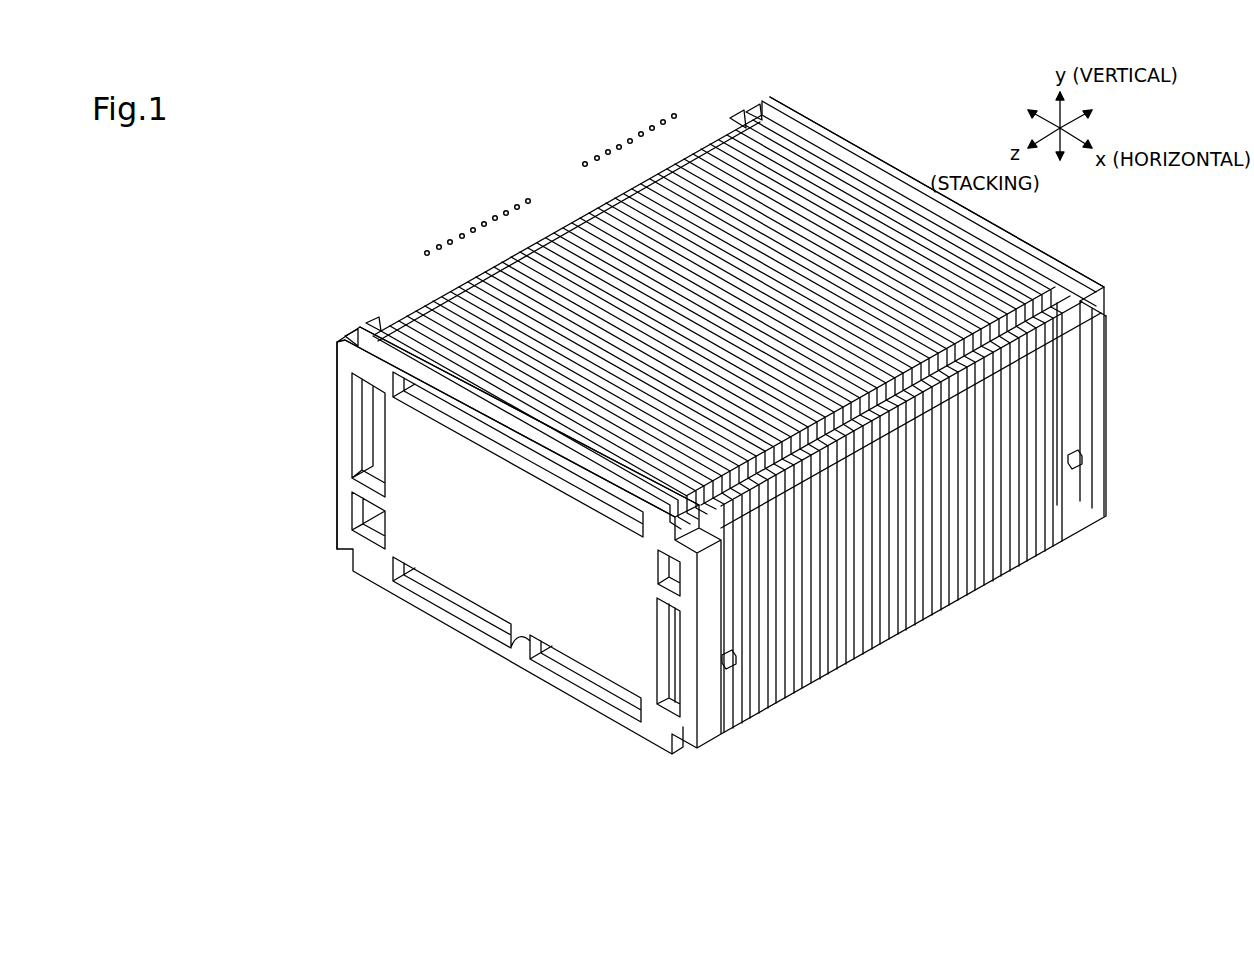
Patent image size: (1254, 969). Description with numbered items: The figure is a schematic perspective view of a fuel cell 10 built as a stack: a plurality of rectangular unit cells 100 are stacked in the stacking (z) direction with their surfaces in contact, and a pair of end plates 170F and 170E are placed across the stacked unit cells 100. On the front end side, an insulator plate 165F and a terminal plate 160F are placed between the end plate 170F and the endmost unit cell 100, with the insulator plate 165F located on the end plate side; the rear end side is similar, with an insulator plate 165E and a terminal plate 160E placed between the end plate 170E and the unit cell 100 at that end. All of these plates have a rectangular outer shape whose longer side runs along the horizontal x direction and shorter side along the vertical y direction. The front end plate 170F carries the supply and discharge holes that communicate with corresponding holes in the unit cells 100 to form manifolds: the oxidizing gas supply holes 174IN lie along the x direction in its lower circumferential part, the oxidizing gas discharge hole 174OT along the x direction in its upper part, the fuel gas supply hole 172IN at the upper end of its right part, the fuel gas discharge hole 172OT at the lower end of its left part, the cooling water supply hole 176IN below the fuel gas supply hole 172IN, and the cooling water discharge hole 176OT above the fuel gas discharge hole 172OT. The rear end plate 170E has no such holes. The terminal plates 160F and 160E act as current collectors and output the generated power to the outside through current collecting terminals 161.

The fuel cell 10 is at (334, 110).
The unit cells 100 is at (570, 238).
The terminal plate 160E is at (728, 125).
The insulator plate 165E is at (735, 122).
The end plate 170E is at (790, 110).
The terminal plate 160F is at (400, 318).
The insulator plate 165F is at (380, 330).
The end plate 170F is at (346, 338).
The cooling water discharge hole 176OT is at (362, 424).
The fuel gas discharge hole 172OT is at (355, 505).
The oxidizing gas discharge hole 174OT is at (520, 455).
The oxidizing gas supply holes 174IN is at (575, 700).
The fuel gas supply hole 172IN is at (676, 578).
The cooling water supply hole 176IN is at (668, 662).
The current collecting terminals 161 is at (735, 668).